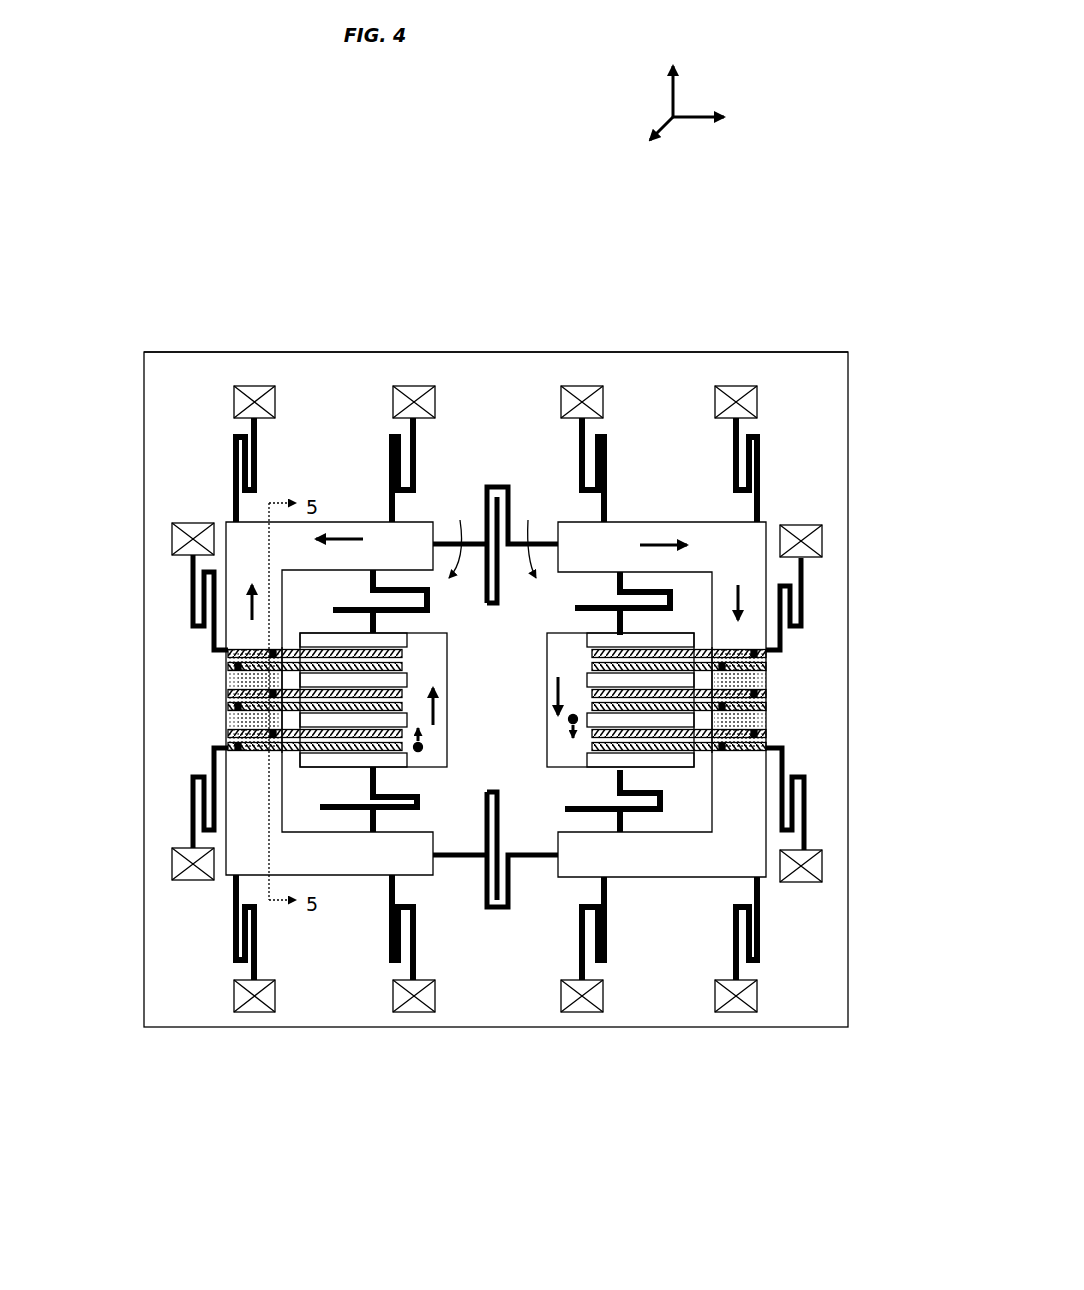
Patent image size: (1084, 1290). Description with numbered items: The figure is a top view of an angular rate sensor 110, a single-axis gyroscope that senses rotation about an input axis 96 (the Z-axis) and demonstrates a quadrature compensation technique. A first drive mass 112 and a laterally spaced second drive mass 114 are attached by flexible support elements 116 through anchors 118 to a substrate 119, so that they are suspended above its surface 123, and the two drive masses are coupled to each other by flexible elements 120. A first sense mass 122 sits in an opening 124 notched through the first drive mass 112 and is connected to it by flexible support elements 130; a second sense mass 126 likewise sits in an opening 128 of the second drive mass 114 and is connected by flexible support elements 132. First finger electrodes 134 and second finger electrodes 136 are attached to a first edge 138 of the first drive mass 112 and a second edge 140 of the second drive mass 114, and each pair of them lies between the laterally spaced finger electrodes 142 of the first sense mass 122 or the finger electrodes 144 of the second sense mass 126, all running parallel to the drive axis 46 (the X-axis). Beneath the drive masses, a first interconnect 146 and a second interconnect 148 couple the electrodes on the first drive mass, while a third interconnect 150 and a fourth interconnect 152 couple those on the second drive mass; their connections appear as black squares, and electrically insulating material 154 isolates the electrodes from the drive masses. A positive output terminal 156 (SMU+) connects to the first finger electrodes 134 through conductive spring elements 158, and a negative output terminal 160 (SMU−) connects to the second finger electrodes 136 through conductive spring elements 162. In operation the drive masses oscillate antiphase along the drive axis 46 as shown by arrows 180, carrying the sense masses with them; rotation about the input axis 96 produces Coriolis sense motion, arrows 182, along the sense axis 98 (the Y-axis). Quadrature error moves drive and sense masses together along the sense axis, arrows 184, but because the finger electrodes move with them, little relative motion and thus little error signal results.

The angular rate sensor 110 is at (474, 1169).
The first drive mass 112 is at (340, 522).
The second drive mass 114 is at (655, 522).
The flexible support elements 116 is at (262, 452).
The anchors 118 is at (249, 386).
The substrate 119 is at (316, 352).
The flexible elements 120 is at (503, 487).
The first sense mass 122 is at (433, 653).
The surface 123 is at (163, 397).
The opening 124 is at (455, 536).
The second sense mass 126 is at (560, 644).
The opening 128 is at (538, 536).
The flexible support elements 130 is at (349, 605).
The flexible support elements 132 is at (646, 606).
The first finger electrodes 134 is at (392, 655).
The second finger electrodes 136 is at (388, 748).
The first edge 138 is at (287, 773).
The second edge 140 is at (700, 757).
The finger electrodes 142 is at (306, 715).
The finger electrodes 144 is at (670, 687).
The first interconnect 146 is at (229, 728).
The second interconnect 148 is at (229, 676).
The third interconnect 150 is at (766, 730).
The fourth interconnect 152 is at (766, 680).
The electrically insulating material 154 is at (229, 690).
The positive output terminal 156 is at (172, 540).
The conductive spring elements 158 is at (192, 600).
The negative output terminal 160 is at (822, 540).
The conductive spring elements 162 is at (192, 823).
The arrows 180 is at (350, 538).
The arrows 182 is at (426, 748).
The arrows 184 is at (243, 595).
The input axis 96 is at (668, 122).
The sense axis 98 is at (673, 95).
The drive axis 46 is at (697, 118).